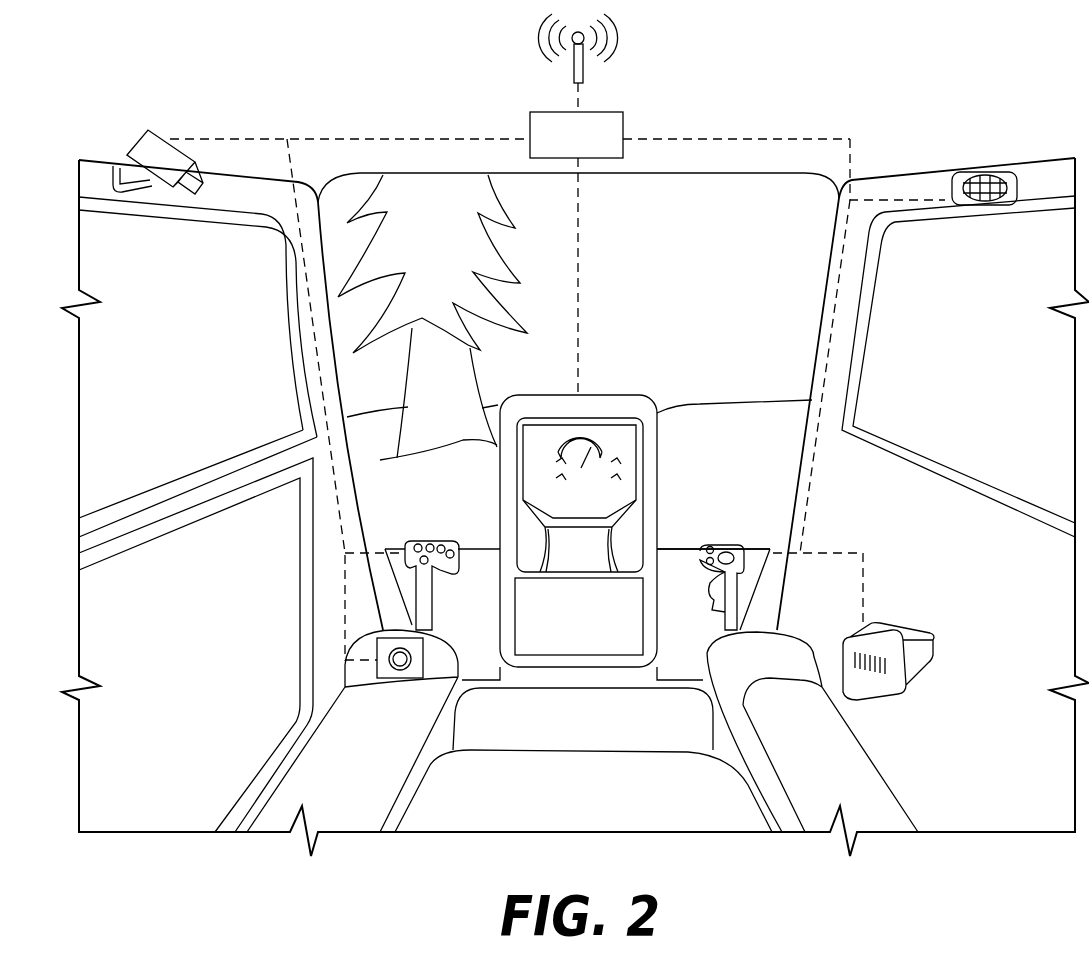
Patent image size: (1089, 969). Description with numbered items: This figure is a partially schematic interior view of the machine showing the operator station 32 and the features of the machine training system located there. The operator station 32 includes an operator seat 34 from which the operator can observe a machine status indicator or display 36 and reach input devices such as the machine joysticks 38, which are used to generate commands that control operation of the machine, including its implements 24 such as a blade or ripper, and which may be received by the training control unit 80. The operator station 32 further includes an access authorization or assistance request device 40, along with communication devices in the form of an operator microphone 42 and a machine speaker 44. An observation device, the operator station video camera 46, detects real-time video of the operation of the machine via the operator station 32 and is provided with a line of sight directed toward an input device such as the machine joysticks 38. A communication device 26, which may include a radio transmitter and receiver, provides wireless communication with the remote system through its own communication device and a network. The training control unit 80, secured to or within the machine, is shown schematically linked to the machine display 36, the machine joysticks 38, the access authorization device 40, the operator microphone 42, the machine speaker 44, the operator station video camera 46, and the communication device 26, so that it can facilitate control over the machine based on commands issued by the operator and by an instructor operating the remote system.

The communication device 26 is at (575, 68).
The training control unit 80 is at (612, 126).
The operator station video camera 46 is at (143, 136).
The machine speaker 44 is at (1006, 178).
The machine display 36 is at (622, 434).
The implement 24 is at (668, 548).
The machine joystick 38 is at (428, 605).
The access authorization or assistance request device 40 is at (381, 685).
The operator microphone 42 is at (924, 680).
The operator station 32 is at (911, 582).
The operator seat 34 is at (434, 833).